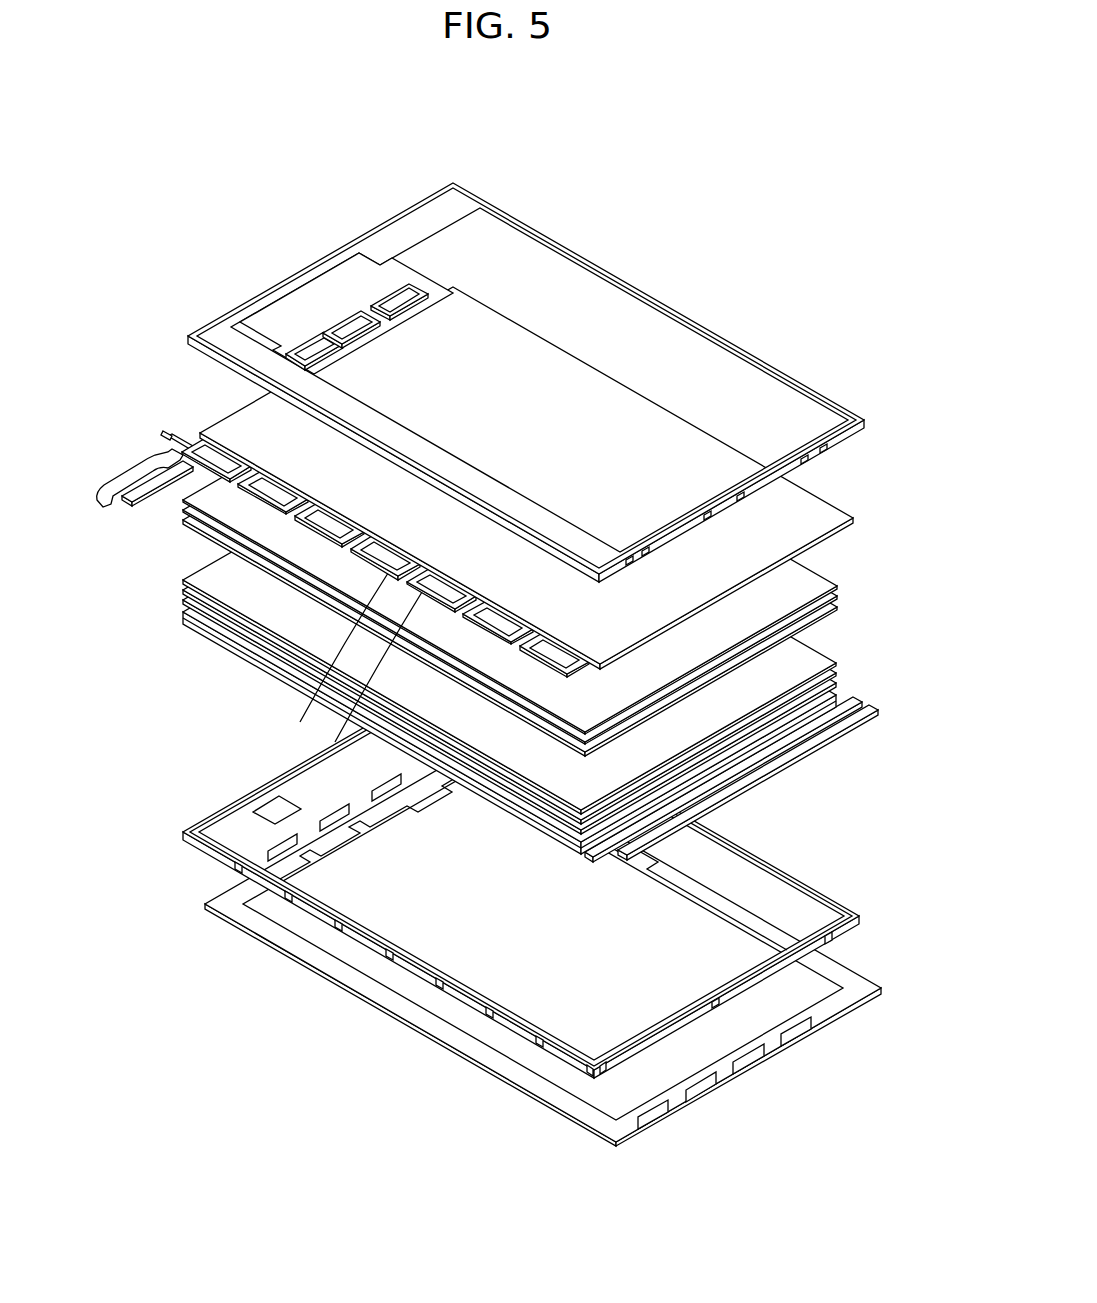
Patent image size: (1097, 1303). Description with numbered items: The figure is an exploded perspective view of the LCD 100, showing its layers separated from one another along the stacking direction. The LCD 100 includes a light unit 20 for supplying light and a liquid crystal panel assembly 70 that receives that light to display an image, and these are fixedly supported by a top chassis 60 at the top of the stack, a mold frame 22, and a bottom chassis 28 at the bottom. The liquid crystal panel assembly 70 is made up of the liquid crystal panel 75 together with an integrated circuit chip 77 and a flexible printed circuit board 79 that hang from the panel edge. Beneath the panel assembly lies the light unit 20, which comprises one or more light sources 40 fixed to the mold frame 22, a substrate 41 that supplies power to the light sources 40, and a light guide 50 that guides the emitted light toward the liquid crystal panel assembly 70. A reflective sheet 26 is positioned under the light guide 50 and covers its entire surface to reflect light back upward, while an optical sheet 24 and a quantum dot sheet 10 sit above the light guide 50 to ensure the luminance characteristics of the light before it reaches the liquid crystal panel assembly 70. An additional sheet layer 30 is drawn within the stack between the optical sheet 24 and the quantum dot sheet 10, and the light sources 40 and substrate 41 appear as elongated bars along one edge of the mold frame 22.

The LCD 100 is at (496, 639).
The light unit 20 is at (496, 577).
The liquid crystal panel assembly 70 is at (484, 729).
The top chassis 60 is at (842, 416).
The mold frame 22 is at (215, 815).
The bottom chassis 28 is at (290, 945).
The liquid crystal panel 75 is at (818, 502).
The integrated circuit chip 77 is at (312, 683).
The flexible printed circuit board 79 is at (340, 708).
The optical sheet 24 is at (182, 497).
The display panel 30 is at (205, 576).
The quantum dot sheet 10 is at (183, 590).
The light guide 50 is at (183, 603).
The reflective sheet 26 is at (203, 620).
The light source 40 is at (838, 720).
The substrate 41 is at (768, 782).